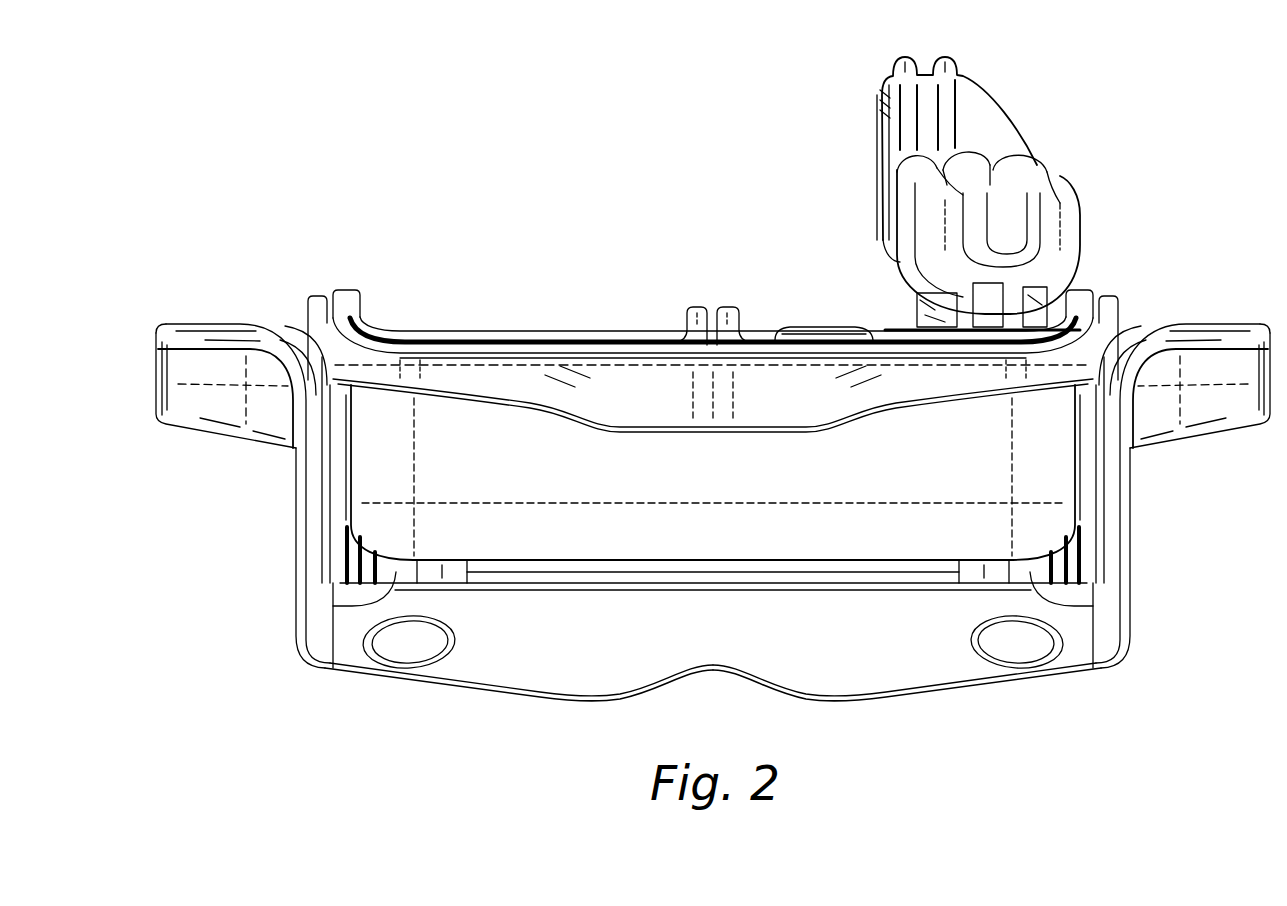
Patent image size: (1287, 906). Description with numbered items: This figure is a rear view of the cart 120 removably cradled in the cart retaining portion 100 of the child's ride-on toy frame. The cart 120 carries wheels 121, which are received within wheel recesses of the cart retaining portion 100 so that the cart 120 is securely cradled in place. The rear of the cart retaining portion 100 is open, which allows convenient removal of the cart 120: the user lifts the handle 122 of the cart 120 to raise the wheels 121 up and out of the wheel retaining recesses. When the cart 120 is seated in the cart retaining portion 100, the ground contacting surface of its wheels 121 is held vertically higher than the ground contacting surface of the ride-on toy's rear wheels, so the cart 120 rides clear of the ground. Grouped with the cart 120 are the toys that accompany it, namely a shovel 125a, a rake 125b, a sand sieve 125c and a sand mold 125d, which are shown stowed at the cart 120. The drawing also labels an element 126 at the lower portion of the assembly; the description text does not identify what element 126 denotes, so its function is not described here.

The cart retaining portion 100 is at (315, 490).
The cart 120 is at (510, 470).
The wheels 121 is at (340, 606).
The handle 122 is at (645, 393).
The shovel 125a is at (968, 120).
The rake 125b is at (1052, 227).
The sand sieve 125c is at (697, 307).
The sand mold 125d is at (825, 330).
The base plate 126 is at (830, 567).